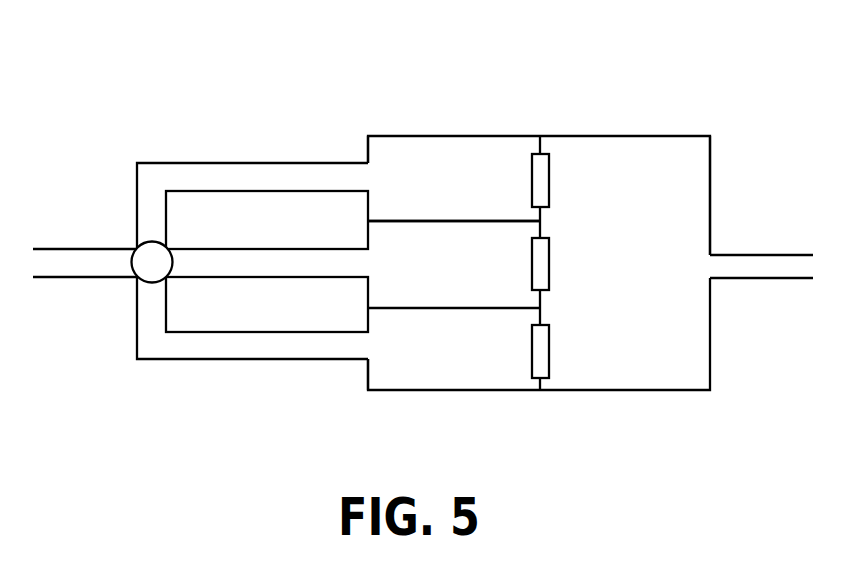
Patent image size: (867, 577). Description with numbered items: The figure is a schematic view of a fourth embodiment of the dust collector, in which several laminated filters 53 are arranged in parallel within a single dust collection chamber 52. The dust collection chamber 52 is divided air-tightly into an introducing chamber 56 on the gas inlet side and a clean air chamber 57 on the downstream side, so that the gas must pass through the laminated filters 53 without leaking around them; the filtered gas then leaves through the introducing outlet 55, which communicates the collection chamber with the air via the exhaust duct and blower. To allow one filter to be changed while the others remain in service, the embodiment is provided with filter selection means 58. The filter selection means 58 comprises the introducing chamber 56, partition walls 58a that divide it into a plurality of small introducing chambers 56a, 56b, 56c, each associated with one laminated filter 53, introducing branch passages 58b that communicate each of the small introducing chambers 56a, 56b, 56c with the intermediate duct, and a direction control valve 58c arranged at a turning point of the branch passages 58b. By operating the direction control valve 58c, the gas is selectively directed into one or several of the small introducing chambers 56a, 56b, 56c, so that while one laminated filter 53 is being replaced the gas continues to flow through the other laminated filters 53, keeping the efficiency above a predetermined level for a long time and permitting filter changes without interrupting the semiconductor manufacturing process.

The dust collection chamber 52 is at (687, 83).
The laminated filter 53 is at (549, 180).
The introducing outlet 55 is at (715, 267).
The introducing chamber 56 is at (507, 144).
The clean air chamber 57 is at (668, 148).
The small introducing chamber 56a is at (395, 173).
The small introducing chamber 56b is at (415, 265).
The small introducing chamber 56c is at (405, 363).
The filter selection means 58 is at (120, 230).
The partition walls 58a is at (473, 221).
The introducing branch passages 58b is at (228, 163).
The direction control valve 58c is at (150, 272).